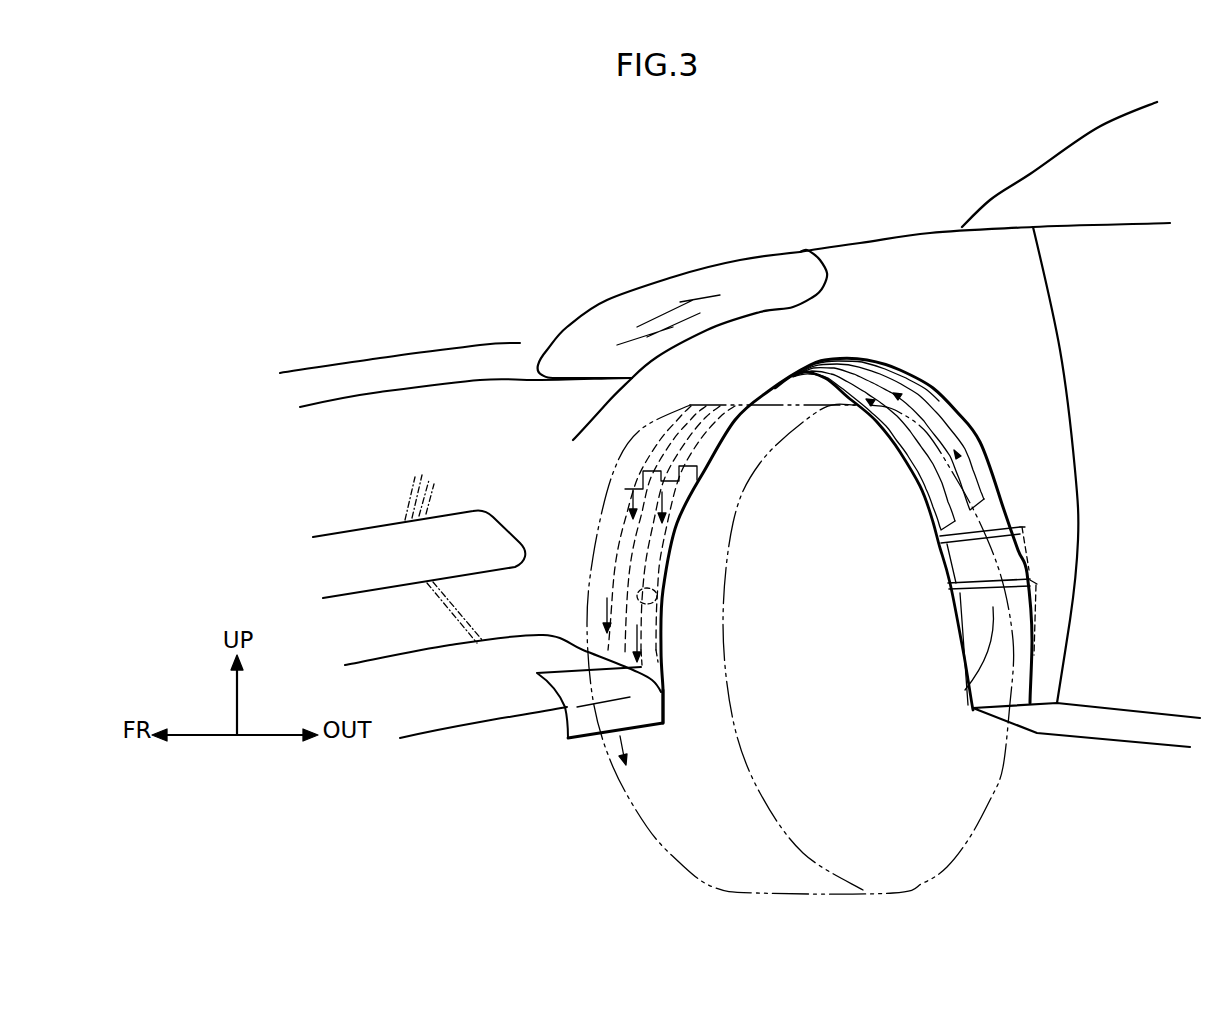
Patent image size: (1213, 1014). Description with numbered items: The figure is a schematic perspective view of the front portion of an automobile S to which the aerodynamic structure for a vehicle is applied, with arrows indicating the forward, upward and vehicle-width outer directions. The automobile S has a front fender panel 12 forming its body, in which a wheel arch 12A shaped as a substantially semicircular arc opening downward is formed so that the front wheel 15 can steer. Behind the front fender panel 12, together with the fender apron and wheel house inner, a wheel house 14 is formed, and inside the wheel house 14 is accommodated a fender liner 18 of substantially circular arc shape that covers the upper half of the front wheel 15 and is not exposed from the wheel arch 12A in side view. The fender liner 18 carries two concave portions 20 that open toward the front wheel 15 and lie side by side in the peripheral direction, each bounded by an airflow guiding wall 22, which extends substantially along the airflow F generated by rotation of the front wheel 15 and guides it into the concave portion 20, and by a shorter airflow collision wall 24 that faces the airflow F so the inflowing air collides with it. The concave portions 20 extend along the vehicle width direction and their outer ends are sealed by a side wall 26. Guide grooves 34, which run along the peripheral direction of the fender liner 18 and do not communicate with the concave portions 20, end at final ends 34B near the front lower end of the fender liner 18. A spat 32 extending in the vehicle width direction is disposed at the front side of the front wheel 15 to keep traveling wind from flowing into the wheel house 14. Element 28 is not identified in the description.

The front fender panel 12 is at (1043, 472).
The wheel arch 12A is at (943, 410).
The wheel house 14 is at (905, 388).
The front wheel 15 is at (943, 843).
The fender liner 18 is at (895, 442).
The concave portion 20 is at (980, 629).
The airflow guiding wall 22 is at (945, 587).
The airflow collision wall 24 is at (940, 537).
The side wall 26 is at (948, 555).
The end portion 28 is at (862, 362).
The spat 32 is at (583, 732).
The guide groove 34 is at (933, 478).
The final end 34B is at (632, 650).
The airflow F is at (663, 502).
The automobile S is at (1009, 182).